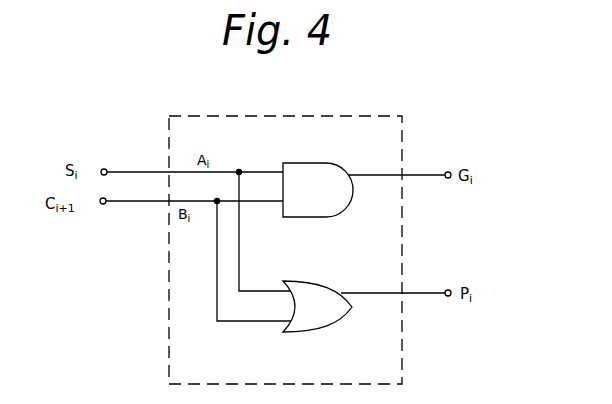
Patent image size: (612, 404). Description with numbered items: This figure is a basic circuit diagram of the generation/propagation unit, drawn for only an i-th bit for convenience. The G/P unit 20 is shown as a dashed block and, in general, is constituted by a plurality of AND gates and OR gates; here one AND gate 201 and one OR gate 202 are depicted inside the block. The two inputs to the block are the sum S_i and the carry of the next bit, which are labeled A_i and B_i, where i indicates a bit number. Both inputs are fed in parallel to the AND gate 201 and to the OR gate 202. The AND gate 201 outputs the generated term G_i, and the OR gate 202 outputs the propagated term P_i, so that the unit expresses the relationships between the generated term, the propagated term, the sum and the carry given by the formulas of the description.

The G/P unit 20 is at (404, 136).
The AND gate 201 is at (320, 162).
The OR gate 202 is at (309, 280).